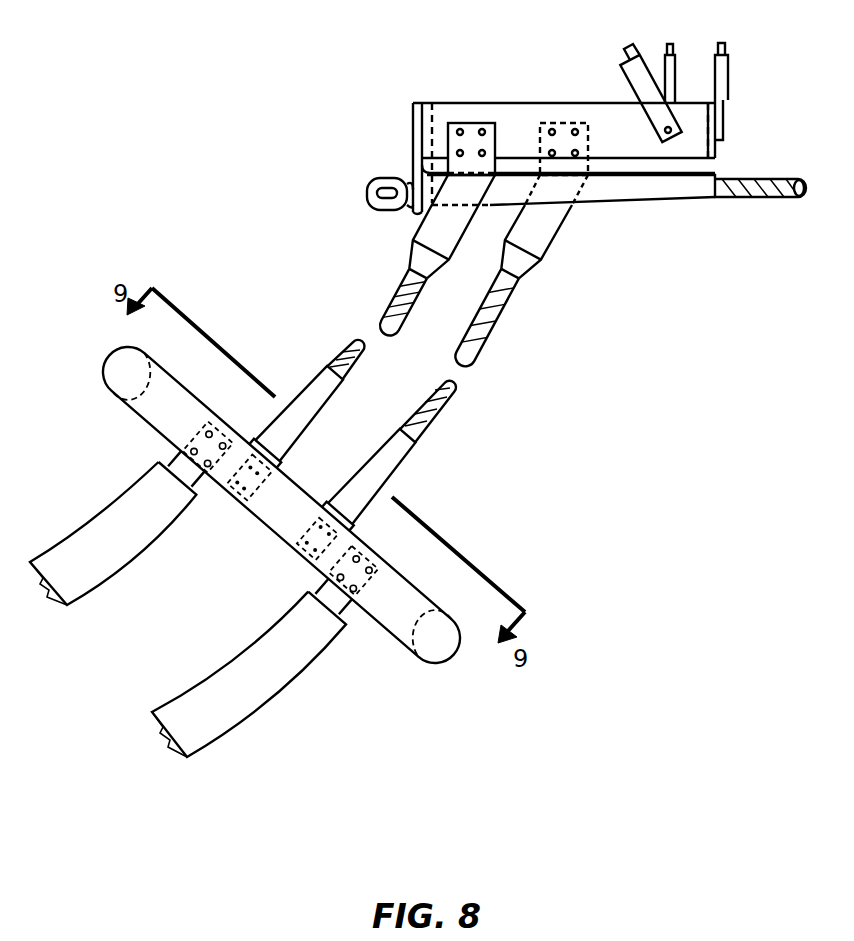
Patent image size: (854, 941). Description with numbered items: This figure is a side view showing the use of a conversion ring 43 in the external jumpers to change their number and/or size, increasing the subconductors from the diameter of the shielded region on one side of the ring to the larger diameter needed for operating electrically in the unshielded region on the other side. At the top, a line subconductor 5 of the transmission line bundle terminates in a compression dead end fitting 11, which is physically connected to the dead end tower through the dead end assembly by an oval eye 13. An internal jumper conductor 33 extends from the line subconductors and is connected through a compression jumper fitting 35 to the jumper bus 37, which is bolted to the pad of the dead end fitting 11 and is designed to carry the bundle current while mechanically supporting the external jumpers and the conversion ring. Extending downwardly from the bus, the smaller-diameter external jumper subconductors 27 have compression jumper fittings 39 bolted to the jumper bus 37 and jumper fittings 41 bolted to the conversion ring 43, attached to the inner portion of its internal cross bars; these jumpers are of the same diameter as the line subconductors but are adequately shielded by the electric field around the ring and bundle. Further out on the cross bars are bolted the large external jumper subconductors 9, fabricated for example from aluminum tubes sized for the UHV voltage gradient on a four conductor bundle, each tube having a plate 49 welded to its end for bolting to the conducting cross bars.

The line subconductor 5 is at (745, 190).
The external jumper subconductor 9 is at (265, 685).
The compression dead end fitting 11 is at (650, 198).
The oval eye 13 is at (371, 202).
The external jumper subconductor 27 is at (495, 304).
The internal jumper conductor 33 is at (724, 15).
The compression jumper fitting 35 is at (726, 72).
The jumper bus 37 is at (523, 122).
The compression jumper fitting 39 is at (540, 241).
The jumper fitting 41 is at (393, 460).
The conversion ring 43 is at (172, 405).
The plate 49 is at (333, 597).